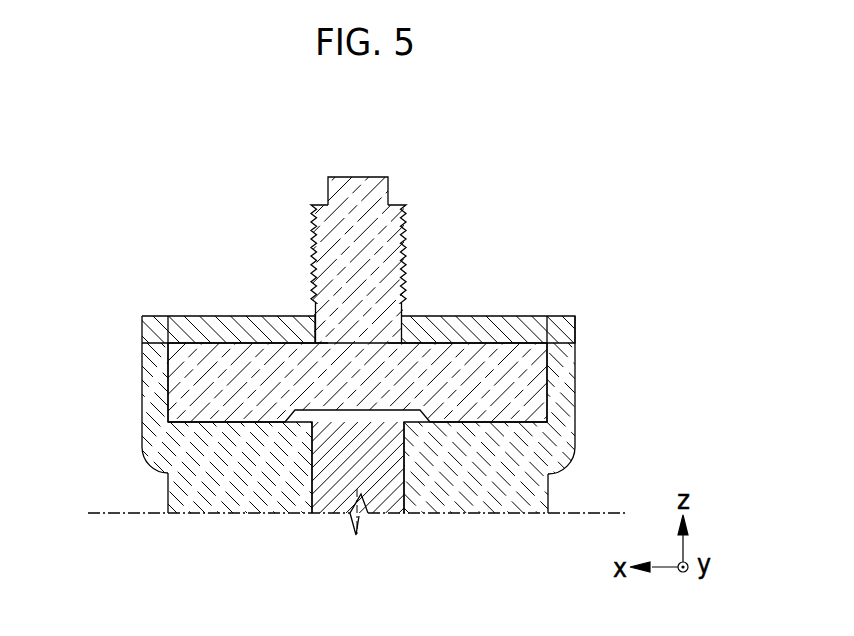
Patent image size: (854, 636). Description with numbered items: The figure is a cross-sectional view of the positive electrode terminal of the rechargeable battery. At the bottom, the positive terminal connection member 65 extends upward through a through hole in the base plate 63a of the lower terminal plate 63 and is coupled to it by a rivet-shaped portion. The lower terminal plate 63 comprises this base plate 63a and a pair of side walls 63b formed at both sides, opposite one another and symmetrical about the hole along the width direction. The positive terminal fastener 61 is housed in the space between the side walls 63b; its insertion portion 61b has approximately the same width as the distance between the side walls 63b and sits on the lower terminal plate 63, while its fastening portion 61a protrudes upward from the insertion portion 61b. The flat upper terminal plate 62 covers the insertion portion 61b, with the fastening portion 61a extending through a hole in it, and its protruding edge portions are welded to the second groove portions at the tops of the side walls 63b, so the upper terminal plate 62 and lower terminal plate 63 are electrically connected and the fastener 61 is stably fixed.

The positive terminal fastener 61 is at (438, 299).
The fastening portion 61a is at (383, 265).
The insertion portion 61b is at (425, 382).
The upper terminal plate 62 is at (196, 330).
The lower terminal plate 63 is at (369, 414).
The base plate 63a is at (230, 483).
The side walls 63b is at (153, 390).
The positive terminal connection member 65 is at (327, 492).